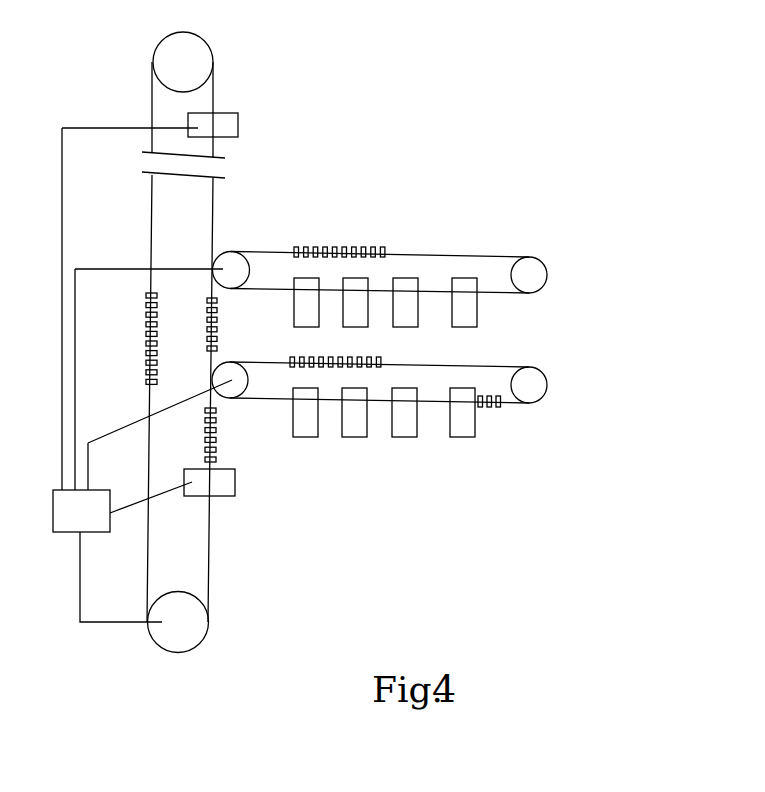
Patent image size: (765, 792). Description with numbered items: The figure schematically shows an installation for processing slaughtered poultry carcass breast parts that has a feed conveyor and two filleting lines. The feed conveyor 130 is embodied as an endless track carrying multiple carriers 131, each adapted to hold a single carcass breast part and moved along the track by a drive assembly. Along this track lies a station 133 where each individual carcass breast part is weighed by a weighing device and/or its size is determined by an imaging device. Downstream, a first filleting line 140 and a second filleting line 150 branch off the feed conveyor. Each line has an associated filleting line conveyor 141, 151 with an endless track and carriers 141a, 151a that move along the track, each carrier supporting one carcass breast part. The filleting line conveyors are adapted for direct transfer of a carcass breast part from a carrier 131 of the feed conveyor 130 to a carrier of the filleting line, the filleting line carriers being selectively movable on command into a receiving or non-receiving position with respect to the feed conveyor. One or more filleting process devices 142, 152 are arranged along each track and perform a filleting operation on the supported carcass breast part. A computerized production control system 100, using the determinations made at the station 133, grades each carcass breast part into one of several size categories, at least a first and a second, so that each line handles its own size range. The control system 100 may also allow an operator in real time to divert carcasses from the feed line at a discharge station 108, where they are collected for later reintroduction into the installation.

The computerized production control system 100 is at (53, 515).
The discharge station 108 is at (235, 487).
The feed conveyor 130 is at (130, 74).
The carrier 131 is at (145, 342).
The station 133 is at (260, 128).
The first filleting line 140 is at (409, 237).
The filleting line conveyor 141 is at (427, 242).
The carrier 141a is at (367, 222).
The filleting process device 142 is at (405, 333).
The second filleting line 150 is at (436, 415).
The filleting line conveyor 151 is at (492, 364).
The carrier 151a is at (480, 410).
The filleting process device 152 is at (455, 440).